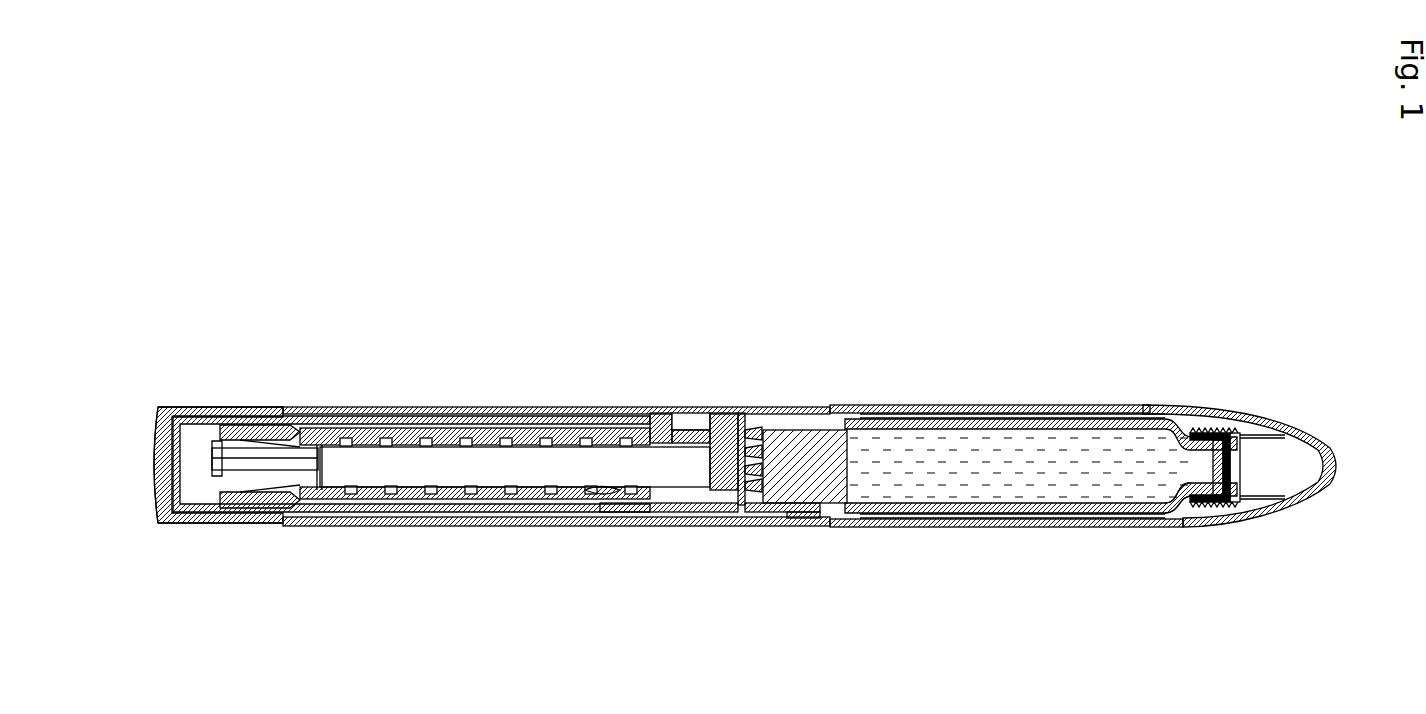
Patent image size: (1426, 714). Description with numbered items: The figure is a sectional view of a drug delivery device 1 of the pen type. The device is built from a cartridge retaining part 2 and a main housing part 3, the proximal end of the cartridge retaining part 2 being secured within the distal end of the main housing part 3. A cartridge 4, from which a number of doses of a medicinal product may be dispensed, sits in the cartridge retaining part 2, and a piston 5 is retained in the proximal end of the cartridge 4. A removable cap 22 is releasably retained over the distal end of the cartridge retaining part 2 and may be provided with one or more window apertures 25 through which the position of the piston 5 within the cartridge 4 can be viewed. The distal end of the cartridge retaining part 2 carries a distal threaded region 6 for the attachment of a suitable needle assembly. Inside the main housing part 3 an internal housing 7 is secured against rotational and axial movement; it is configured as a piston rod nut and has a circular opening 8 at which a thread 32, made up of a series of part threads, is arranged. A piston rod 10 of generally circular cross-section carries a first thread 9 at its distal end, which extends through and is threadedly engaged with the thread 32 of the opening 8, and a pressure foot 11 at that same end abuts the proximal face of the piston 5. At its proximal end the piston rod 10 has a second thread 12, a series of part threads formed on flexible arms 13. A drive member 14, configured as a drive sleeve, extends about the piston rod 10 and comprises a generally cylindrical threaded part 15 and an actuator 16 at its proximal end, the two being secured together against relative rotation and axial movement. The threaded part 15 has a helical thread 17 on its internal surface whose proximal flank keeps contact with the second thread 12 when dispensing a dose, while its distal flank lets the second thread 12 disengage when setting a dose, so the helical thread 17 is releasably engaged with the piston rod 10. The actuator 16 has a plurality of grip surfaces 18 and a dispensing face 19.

The drug delivery device 1 is at (442, 282).
The cartridge retaining part 2 is at (1170, 520).
The main housing part 3 is at (598, 408).
The cartridge 4 is at (1080, 419).
The piston 5 is at (800, 488).
The distal threaded region 6 is at (1222, 504).
The internal housing 7 is at (739, 428).
The circular opening 8 is at (704, 430).
The first thread 9 is at (660, 440).
The piston rod 10 is at (521, 464).
The pressure foot 11 is at (745, 506).
The second thread 12 is at (228, 430).
The flexible arms 13 is at (270, 434).
The drive member 14 is at (213, 398).
The threaded part 15 is at (400, 427).
The actuator 16 is at (168, 407).
The helical thread 17 is at (337, 423).
The grip surfaces 18 is at (234, 530).
The dispensing face 19 is at (156, 496).
The removable cap 22 is at (1208, 411).
The window apertures 25 is at (975, 412).
The thread 32 is at (690, 438).